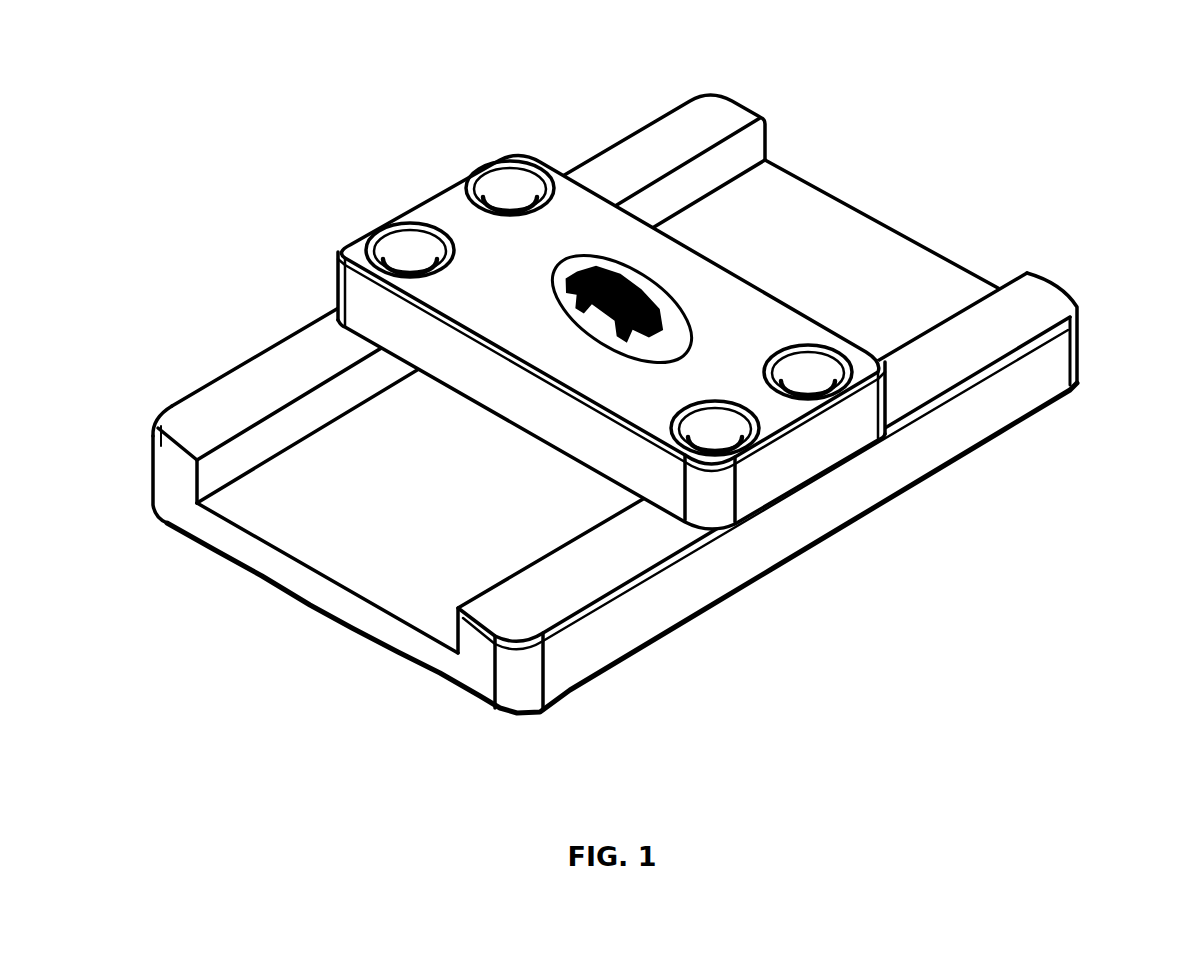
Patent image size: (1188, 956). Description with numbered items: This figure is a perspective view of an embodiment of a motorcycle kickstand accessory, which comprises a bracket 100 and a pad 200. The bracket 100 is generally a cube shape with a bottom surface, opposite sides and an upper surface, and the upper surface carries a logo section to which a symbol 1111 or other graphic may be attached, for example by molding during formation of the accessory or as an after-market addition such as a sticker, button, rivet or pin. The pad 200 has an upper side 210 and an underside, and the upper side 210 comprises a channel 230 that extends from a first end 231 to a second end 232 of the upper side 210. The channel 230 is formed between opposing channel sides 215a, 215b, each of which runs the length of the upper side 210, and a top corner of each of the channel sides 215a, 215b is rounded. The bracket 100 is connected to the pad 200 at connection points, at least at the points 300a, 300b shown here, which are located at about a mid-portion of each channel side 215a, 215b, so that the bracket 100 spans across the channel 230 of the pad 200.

The bracket 100 is at (590, 296).
The pad 200 is at (653, 373).
The upper side 210 is at (1034, 284).
The channel side 215a is at (523, 602).
The channel side 215b is at (324, 352).
The channel 230 is at (922, 175).
The first end 231 is at (327, 578).
The second end 232 is at (881, 224).
The connection point 300a is at (754, 480).
The connection point 300b is at (357, 232).
The symbol 1111 is at (584, 260).